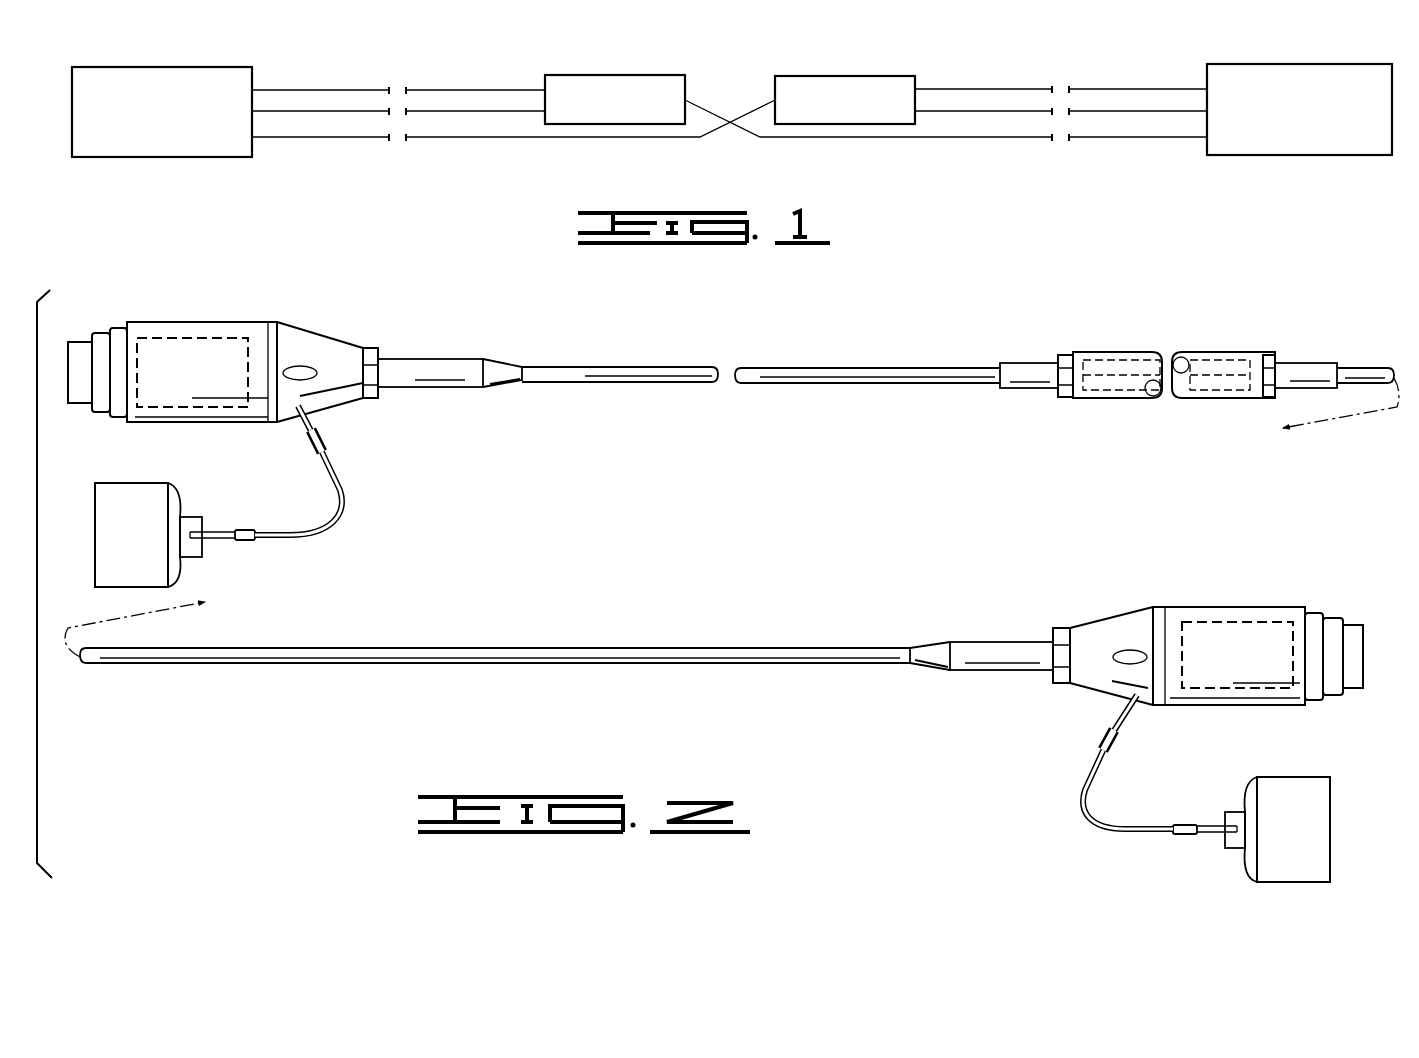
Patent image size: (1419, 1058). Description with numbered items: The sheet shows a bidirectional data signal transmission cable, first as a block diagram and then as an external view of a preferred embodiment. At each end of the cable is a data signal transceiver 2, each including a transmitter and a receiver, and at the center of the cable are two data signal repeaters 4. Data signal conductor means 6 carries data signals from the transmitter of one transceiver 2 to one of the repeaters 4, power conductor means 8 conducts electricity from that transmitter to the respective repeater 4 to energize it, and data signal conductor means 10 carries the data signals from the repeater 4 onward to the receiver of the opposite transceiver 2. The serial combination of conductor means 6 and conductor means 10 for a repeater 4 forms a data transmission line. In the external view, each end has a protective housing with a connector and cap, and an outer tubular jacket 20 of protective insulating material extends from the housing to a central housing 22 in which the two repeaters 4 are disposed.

In FIG. 1, the data signal transceiver 2 is at (200, 70).
In FIG. 1, the data signal repeater 4 is at (636, 75).
In FIG. 2, the data signal repeater 4 is at (1105, 360).
In FIG. 1, the data signal conductor means 6 is at (455, 90).
In FIG. 1, the power conductor means 8 is at (485, 111).
In FIG. 1, the data signal conductor means 10 is at (450, 140).
In FIG. 2, the outer tubular jacket 20 is at (618, 370).
In FIG. 2, the housing 22 is at (1228, 352).